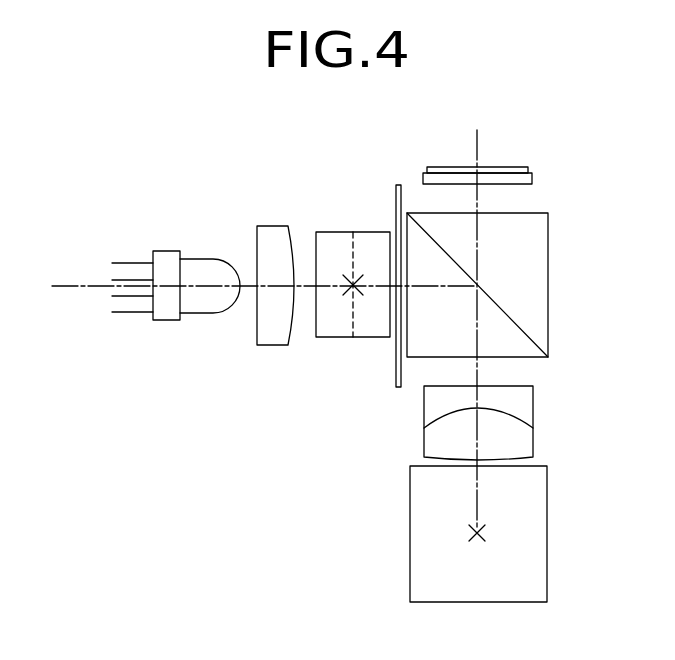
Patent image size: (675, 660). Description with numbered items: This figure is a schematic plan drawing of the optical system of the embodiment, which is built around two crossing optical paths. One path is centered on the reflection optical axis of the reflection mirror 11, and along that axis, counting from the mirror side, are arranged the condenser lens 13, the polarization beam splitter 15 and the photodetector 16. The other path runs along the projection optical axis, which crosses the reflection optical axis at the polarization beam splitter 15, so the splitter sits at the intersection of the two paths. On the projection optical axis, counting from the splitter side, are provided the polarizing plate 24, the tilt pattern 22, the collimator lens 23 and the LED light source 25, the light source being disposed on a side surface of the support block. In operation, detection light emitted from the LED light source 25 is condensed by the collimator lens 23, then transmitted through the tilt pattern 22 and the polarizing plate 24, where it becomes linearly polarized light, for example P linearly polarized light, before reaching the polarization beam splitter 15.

The reflection mirror 11 is at (547, 497).
The condenser lens 13 is at (533, 413).
The polarization beam splitter 15 is at (548, 260).
The photodetector 16 is at (507, 167).
The tilt pattern 22 is at (338, 338).
The collimator lens 23 is at (268, 226).
The polarizing plate 24 is at (396, 207).
The LED light source 25 is at (205, 313).